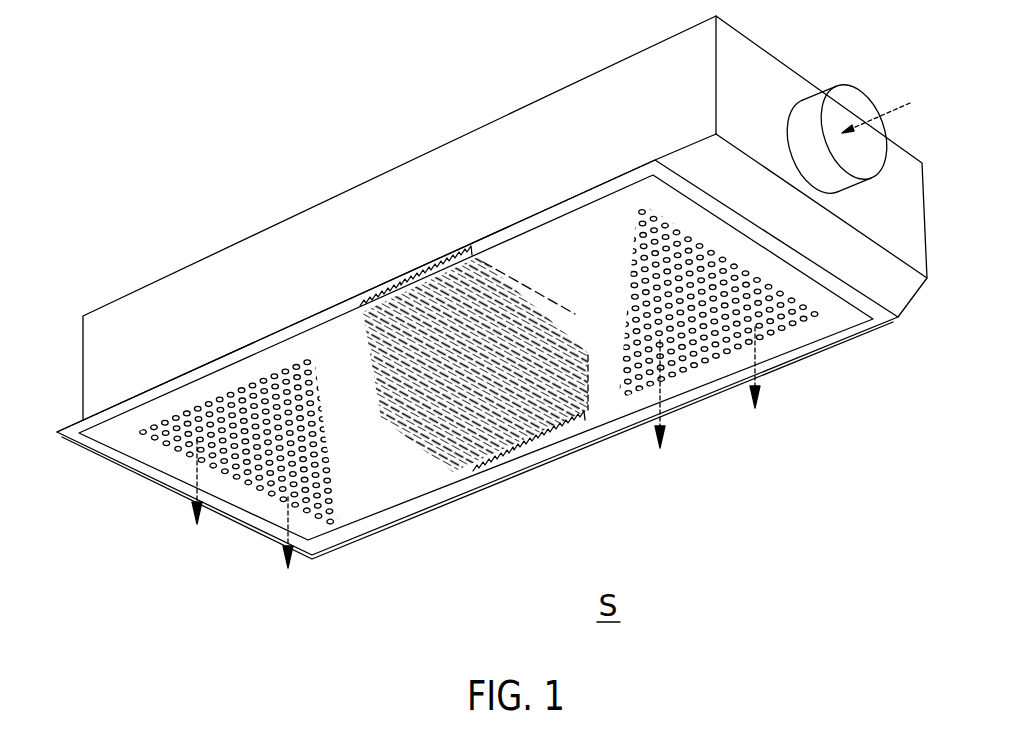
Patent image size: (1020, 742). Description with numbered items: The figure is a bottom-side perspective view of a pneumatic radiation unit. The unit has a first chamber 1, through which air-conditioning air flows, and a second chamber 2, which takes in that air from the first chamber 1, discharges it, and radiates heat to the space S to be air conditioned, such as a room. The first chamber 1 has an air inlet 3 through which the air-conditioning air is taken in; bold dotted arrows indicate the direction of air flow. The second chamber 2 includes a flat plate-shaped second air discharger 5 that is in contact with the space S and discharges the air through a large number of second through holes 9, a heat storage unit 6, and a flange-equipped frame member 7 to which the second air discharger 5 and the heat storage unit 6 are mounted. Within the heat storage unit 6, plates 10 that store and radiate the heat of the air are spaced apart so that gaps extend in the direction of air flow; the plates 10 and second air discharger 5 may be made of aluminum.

The first chamber 1 is at (165, 266).
The second chamber 2 is at (538, 383).
The air inlet 3 is at (846, 102).
The second air discharger 5 is at (580, 363).
The heat storage unit 6 is at (448, 472).
The flange-equipped frame member 7 is at (136, 483).
The second through holes 9 is at (264, 476).
The plates 10 is at (527, 460).